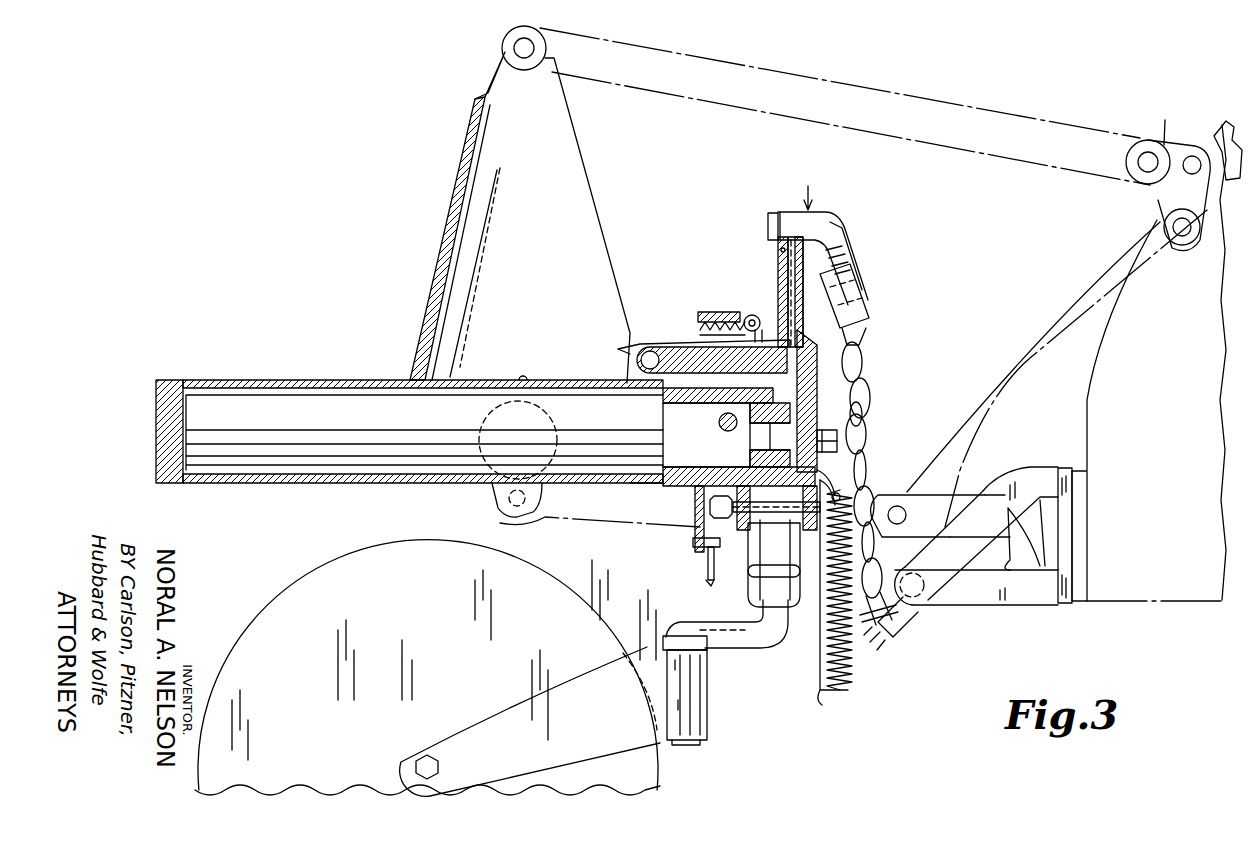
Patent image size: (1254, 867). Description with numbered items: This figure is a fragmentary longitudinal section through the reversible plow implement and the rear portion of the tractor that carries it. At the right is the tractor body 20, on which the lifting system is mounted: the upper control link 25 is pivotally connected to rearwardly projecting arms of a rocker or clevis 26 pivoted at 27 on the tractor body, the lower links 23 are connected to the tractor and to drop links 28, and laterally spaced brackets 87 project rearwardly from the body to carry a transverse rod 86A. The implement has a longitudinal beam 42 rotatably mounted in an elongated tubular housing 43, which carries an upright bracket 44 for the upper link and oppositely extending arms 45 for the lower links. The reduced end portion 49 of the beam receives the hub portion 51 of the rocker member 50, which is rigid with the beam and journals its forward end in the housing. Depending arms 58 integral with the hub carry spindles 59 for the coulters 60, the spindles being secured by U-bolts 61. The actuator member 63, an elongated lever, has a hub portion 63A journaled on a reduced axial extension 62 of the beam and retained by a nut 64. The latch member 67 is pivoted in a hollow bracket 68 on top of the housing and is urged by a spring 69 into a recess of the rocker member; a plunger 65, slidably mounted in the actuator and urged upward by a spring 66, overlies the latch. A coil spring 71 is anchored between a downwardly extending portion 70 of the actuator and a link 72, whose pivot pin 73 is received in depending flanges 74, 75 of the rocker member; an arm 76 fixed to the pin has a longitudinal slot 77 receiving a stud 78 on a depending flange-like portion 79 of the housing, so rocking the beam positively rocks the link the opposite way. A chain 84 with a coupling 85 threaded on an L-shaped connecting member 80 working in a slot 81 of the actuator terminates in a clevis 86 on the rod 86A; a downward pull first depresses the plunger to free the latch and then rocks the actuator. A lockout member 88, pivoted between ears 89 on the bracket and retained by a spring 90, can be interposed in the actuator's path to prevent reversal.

The tractor body 20 is at (1160, 601).
The lower links 23 is at (584, 520).
The upper control link 25 is at (797, 70).
The rocker or clevis 26 is at (1178, 132).
The rocker pivot 27 is at (1180, 246).
The drop links 28 is at (1070, 312).
The beam 42 is at (156, 386).
The tubular housing 43 is at (368, 485).
The upright bracket 44 is at (586, 158).
The oppositely extending arms 45 is at (480, 422).
The reduced end portion 49 is at (705, 431).
The rocker member 50 is at (732, 587).
The hub portion 51 is at (642, 489).
The depending arms 58 is at (748, 590).
The spindles 59 is at (680, 624).
The coulters 60 is at (292, 586).
The U-bolts 61 is at (770, 577).
The reduced axial extension 62 is at (758, 440).
The actuator member 63 is at (820, 366).
The hub portion of actuator member 63A is at (878, 412).
The nut 64 is at (838, 432).
The plunger 65 is at (804, 332).
The spring 66 is at (789, 286).
The latch member 67 is at (870, 398).
The hollow bracket 68 is at (644, 345).
The spring 69 is at (618, 349).
The downwardly extending portion 70 is at (842, 496).
The coil spring 71 is at (853, 660).
The link 72 is at (820, 692).
The pivot pin 73 is at (712, 510).
The depending flange 74 is at (756, 562).
The depending flange 75 is at (774, 563).
The arm 76 is at (708, 584).
The longitudinal slot 77 is at (708, 563).
The stud 78 is at (693, 543).
The depending flange-like portion 79 is at (694, 500).
The connecting member 80 is at (815, 212).
The slot 81 is at (776, 247).
The chain 84 is at (873, 377).
The coupling 85 is at (869, 300).
The clevis 86 is at (916, 614).
The transverse rod 86A is at (928, 598).
The brackets 87 is at (1052, 600).
The lockout member 88 is at (698, 327).
The ears 89 is at (752, 315).
The spring 90 is at (712, 310).